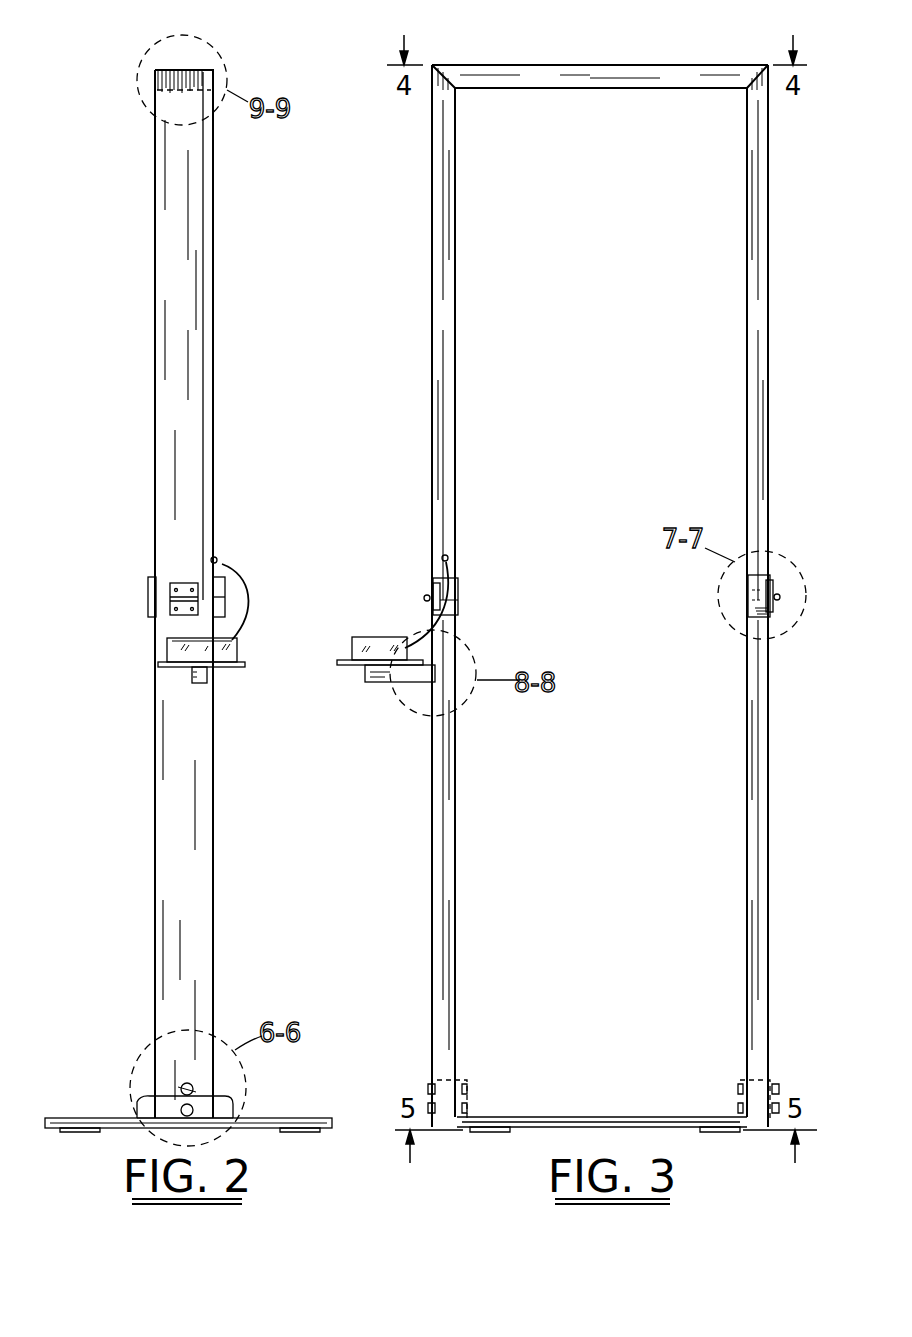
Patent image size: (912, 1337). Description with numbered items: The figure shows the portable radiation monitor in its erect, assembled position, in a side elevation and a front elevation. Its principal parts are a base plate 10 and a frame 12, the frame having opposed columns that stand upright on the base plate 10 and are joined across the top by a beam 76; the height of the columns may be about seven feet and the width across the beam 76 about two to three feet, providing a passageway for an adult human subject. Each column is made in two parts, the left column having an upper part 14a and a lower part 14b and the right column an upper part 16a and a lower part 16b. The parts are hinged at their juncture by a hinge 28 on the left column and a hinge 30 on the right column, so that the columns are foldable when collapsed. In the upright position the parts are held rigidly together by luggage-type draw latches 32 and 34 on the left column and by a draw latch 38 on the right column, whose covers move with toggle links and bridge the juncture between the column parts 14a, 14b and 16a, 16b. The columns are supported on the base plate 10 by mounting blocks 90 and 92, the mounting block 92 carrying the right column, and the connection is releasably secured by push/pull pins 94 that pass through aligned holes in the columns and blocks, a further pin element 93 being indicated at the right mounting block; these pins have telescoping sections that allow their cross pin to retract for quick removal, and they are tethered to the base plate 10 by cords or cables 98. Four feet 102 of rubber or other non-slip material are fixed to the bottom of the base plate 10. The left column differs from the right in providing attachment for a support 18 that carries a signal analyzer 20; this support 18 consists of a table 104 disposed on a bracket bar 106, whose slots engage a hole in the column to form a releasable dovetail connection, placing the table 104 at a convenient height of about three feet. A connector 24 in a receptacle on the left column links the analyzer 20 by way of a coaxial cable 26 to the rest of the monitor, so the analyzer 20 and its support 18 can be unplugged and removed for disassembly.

In FIG. 2, the base plate 10 is at (58, 1118).
In FIG. 3, the base plate 10 is at (665, 1117).
In FIG. 3, the frame 12 is at (543, 54).
In FIG. 2, the upper part of left side column 14a is at (200, 372).
In FIG. 3, the upper part of left side column 14a is at (435, 368).
In FIG. 2, the lower part of left side column 14b is at (205, 870).
In FIG. 3, the lower part of left side column 14b is at (440, 870).
In FIG. 3, the upper part of right side column 16a is at (768, 368).
In FIG. 3, the lower part of right side column 16b is at (760, 870).
In FIG. 2, the support 18 is at (225, 681).
In FIG. 3, the support 18 is at (360, 679).
In FIG. 2, the signal analyzer 20 is at (240, 645).
In FIG. 3, the signal analyzer 20 is at (396, 642).
In FIG. 2, the connector 24 is at (216, 558).
In FIG. 3, the connector 24 is at (448, 556).
In FIG. 2, the coaxial cable 26 is at (253, 590).
In FIG. 3, the coaxial cable 26 is at (426, 605).
In FIG. 2, the hinge 28 is at (182, 582).
In FIG. 3, the hinge 28 is at (425, 596).
In FIG. 3, the hinge 30 is at (778, 596).
In FIG. 2, the draw latch 32 is at (148, 590).
In FIG. 2, the draw latch 34 is at (223, 588).
In FIG. 3, the draw latch 34 is at (460, 592).
In FIG. 3, the draw latch 38 is at (773, 610).
In FIG. 3, the beam 76 is at (580, 70).
In FIG. 2, the mounting block 90 is at (240, 1073).
In FIG. 3, the mounting block 90 is at (455, 1080).
In FIG. 3, the mounting block 92 is at (770, 1070).
In FIG. 3, the bolt 93 is at (778, 1108).
In FIG. 2, the push/pull pins 94 is at (183, 1085).
In FIG. 3, the push/pull pins 94 is at (428, 1107).
In FIG. 2, the cords or cables 98 is at (196, 1097).
In FIG. 2, the feet 102 is at (328, 1145).
In FIG. 3, the feet 102 is at (740, 1147).
In FIG. 2, the table 104 is at (166, 667).
In FIG. 3, the table 104 is at (342, 661).
In FIG. 2, the bracket bar 106 is at (205, 684).
In FIG. 3, the bracket bar 106 is at (413, 683).